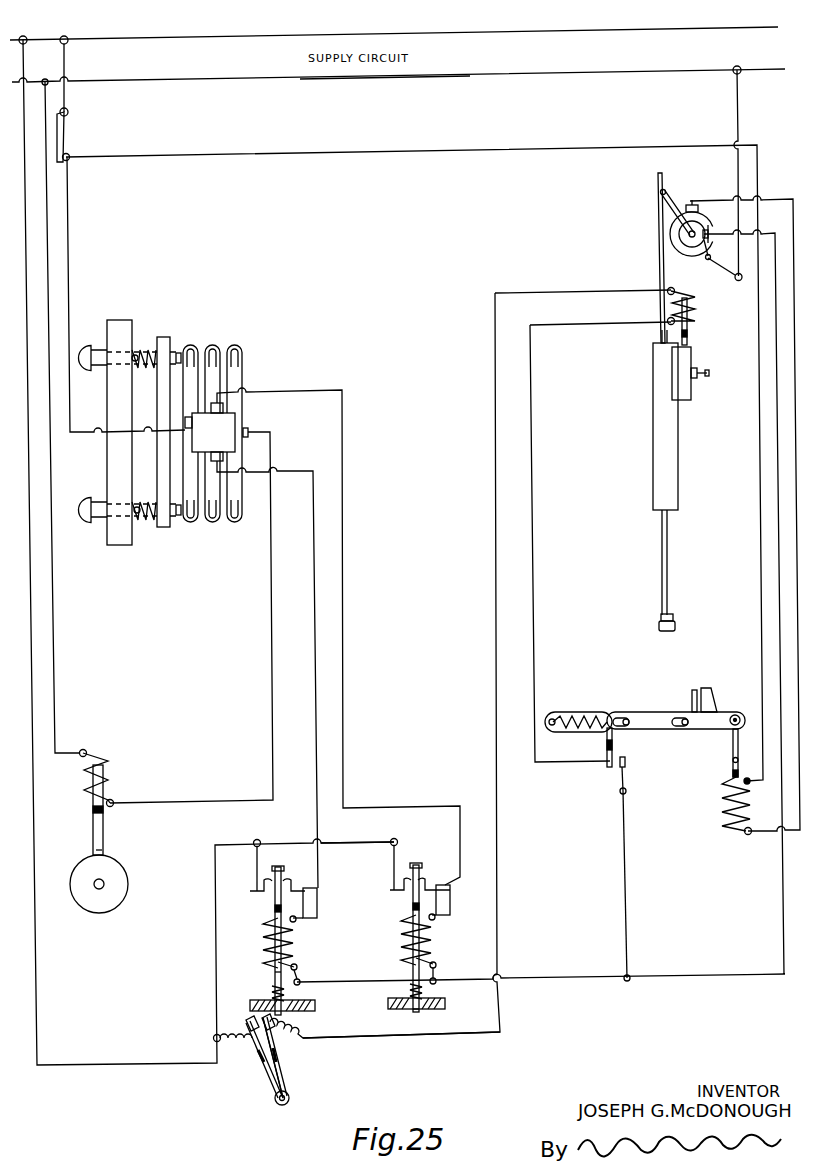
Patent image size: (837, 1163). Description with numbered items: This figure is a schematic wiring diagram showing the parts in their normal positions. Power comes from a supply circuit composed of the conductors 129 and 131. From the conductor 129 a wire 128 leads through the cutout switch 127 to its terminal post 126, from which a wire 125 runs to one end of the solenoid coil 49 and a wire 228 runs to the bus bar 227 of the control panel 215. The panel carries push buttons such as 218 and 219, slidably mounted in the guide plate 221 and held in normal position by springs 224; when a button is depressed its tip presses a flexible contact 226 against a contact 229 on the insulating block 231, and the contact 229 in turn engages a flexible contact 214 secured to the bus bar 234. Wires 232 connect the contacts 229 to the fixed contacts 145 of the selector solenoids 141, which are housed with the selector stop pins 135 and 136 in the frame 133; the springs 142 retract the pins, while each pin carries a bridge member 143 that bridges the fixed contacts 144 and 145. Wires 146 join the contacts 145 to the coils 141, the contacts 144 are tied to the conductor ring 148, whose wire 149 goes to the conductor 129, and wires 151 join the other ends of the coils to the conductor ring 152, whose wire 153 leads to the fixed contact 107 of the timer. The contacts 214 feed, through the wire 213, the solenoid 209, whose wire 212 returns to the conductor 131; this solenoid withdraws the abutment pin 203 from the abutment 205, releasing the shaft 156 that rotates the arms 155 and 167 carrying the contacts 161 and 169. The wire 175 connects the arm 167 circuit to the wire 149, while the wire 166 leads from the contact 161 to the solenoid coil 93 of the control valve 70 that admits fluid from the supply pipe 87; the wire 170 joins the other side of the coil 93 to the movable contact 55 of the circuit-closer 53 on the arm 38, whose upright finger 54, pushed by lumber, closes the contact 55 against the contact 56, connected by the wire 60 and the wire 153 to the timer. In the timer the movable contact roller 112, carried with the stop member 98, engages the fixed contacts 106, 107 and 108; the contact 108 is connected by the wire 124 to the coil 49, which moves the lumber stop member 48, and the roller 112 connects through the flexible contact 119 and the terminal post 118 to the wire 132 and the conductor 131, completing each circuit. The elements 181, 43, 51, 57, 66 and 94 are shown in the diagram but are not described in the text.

The conductor of supply circuit 129 is at (225, 38).
The wire 128 is at (67, 70).
The conductor of supply circuit 131 is at (462, 77).
The wire 132 is at (740, 127).
The wire 125 is at (362, 155).
The wire 124 is at (777, 198).
The wire 153 is at (780, 232).
The wire 166 is at (535, 292).
The wire 170 is at (540, 520).
The wire 149 is at (52, 58).
The conductor ring 148 is at (348, 842).
The conductor ring 152 is at (358, 981).
The wire 60 is at (622, 884).
The wires 232 is at (350, 452).
The wire 213 is at (273, 680).
The wire 212 is at (57, 690).
The wire 228 is at (70, 262).
The cutout switch 127 is at (65, 143).
The terminal post 126 is at (69, 160).
The control panel 215 is at (130, 320).
The guide plate 221 is at (168, 337).
The push button 219 is at (83, 347).
The push button 218 is at (87, 523).
The springs 224 is at (142, 347).
The flexible contact 226 is at (192, 345).
The contacts 229 is at (217, 345).
The flexible contacts 214 is at (242, 345).
The insulating block 231 is at (222, 427).
The bus bar 227 is at (185, 430).
The bus bar 234 is at (250, 445).
The solenoid 209 is at (110, 782).
The abutment pin 203 is at (103, 830).
The abutment 205 is at (99, 856).
The wheel 181 is at (105, 884).
The bridge member 143 is at (280, 870).
The fixed contact 144 is at (260, 880).
The fixed contact 145 is at (300, 879).
The wires 146 is at (318, 906).
The solenoid 141 is at (275, 950).
The wires 151 is at (313, 972).
The selector stop pin 135 is at (276, 973).
The springs 142 is at (272, 994).
The frame 133 is at (315, 1006).
The selector stop pin 136 is at (418, 1010).
The contact 169 is at (256, 1018).
The contact 161 is at (285, 1020).
The wire 175 is at (232, 1042).
The contact arm 167 is at (267, 1075).
The rotary arm 155 is at (280, 1070).
The shaft 156 is at (290, 1098).
The arm 38 is at (718, 715).
The circuit-closer 53 is at (647, 714).
The upright finger 54 is at (694, 690).
The lumber stop member 48 is at (710, 688).
The rod 43 is at (733, 745).
The collar 51 is at (732, 778).
The solenoid coil 49 is at (722, 807).
The movable contact 55 is at (609, 768).
The contact 56 is at (626, 760).
The solenoid coil 57 is at (663, 424).
The guide bar 66 is at (658, 228).
The stop member 98 is at (668, 194).
The fixed contact of timer 106 is at (678, 198).
The contact 108 is at (690, 204).
The contact roller 112 is at (712, 228).
The fixed contact 107 is at (709, 251).
The flexible contact 119 is at (707, 259).
The terminal post 118 is at (739, 281).
The solenoid coil 93 is at (696, 319).
The rod 94 is at (688, 342).
The supply pipe 87 is at (710, 373).
The control valve 70 is at (688, 399).